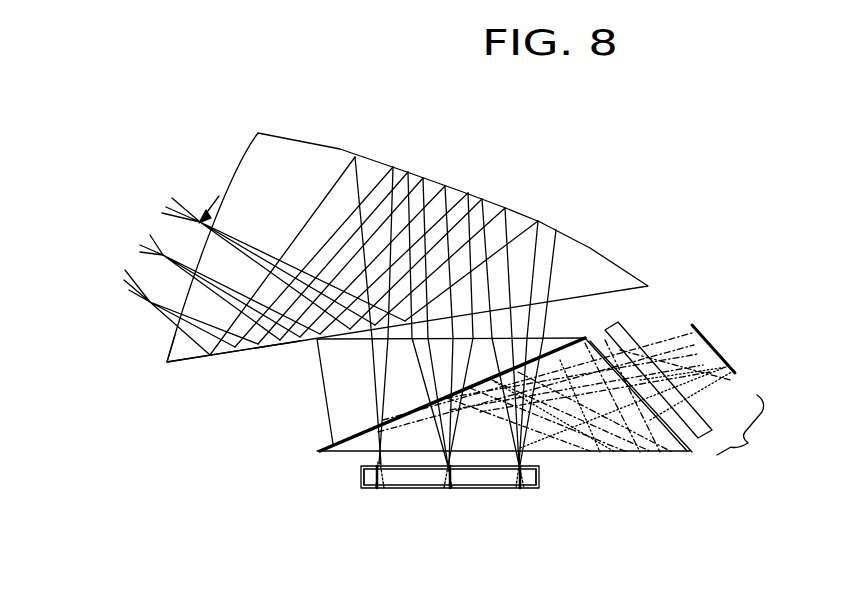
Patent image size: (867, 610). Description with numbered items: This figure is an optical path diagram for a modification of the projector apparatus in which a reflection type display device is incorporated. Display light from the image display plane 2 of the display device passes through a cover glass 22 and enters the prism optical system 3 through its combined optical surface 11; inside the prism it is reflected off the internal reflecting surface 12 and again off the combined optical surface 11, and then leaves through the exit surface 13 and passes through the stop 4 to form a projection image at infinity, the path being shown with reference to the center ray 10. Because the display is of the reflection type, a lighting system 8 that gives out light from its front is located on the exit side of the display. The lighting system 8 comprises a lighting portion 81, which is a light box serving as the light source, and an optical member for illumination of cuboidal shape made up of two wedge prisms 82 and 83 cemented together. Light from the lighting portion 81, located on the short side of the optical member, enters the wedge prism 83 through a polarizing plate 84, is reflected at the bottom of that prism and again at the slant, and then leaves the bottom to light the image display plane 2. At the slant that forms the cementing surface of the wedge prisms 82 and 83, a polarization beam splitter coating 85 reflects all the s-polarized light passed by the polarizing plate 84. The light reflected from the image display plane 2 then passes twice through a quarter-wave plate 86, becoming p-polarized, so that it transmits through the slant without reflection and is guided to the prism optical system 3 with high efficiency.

The image display plane 2 is at (463, 488).
The prism optical system 3 is at (598, 270).
The stop 4 is at (151, 301).
The lighting system 8 is at (634, 472).
The center ray 10 is at (147, 240).
The combined optical surface 11 is at (237, 340).
The internal reflecting surface 12 is at (368, 158).
The exit surface 13 is at (172, 337).
The cover glass 22 is at (540, 482).
The lighting portion 81 is at (737, 405).
The wedge prism 82 is at (324, 388).
The wedge prism 83 is at (343, 450).
The polarizing plate 84 is at (687, 452).
The polarization beam splitter coating 85 is at (350, 444).
The quarter-wave plate 86 is at (366, 464).